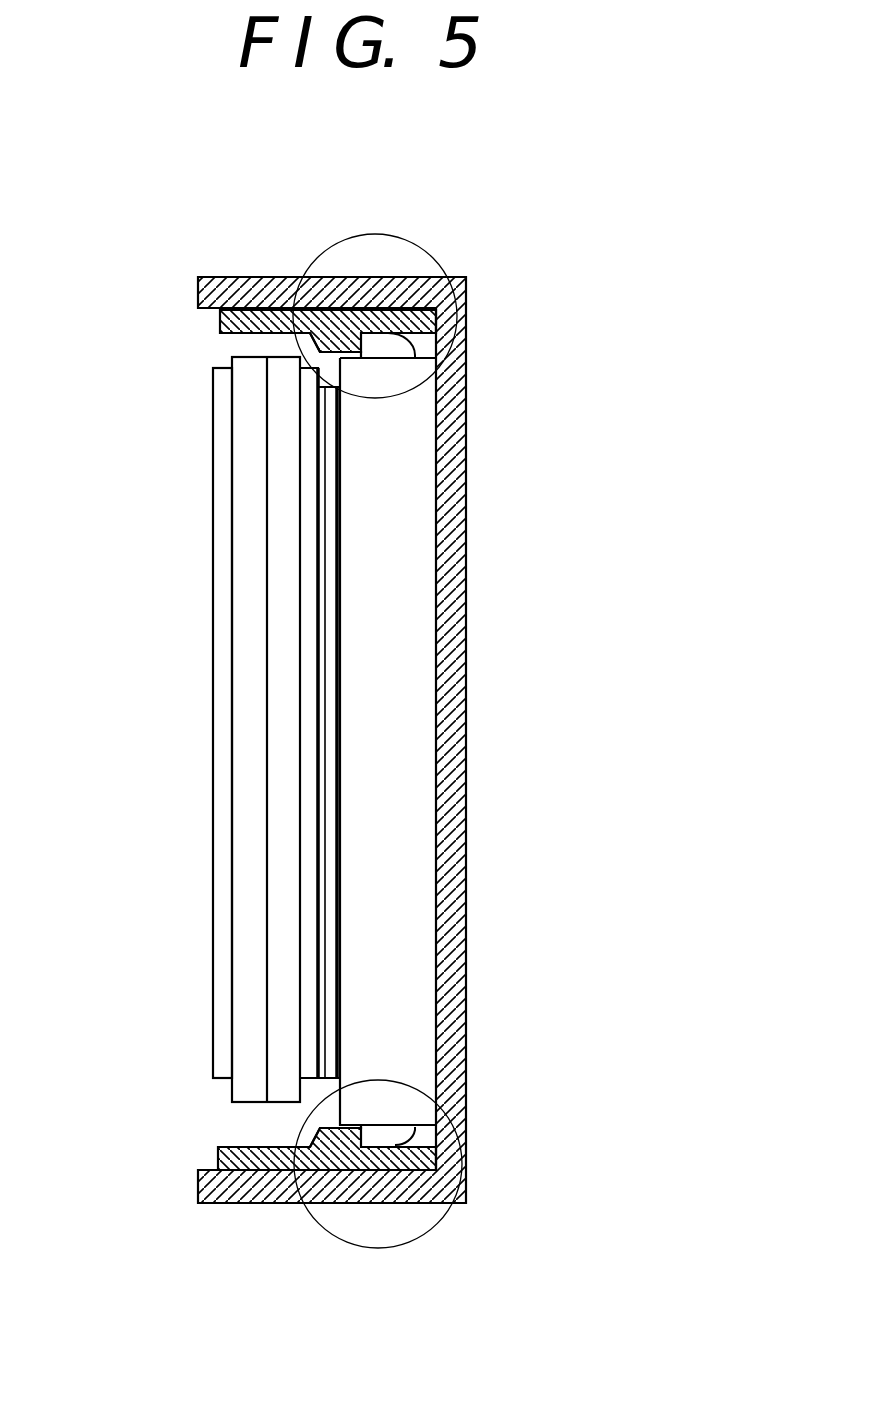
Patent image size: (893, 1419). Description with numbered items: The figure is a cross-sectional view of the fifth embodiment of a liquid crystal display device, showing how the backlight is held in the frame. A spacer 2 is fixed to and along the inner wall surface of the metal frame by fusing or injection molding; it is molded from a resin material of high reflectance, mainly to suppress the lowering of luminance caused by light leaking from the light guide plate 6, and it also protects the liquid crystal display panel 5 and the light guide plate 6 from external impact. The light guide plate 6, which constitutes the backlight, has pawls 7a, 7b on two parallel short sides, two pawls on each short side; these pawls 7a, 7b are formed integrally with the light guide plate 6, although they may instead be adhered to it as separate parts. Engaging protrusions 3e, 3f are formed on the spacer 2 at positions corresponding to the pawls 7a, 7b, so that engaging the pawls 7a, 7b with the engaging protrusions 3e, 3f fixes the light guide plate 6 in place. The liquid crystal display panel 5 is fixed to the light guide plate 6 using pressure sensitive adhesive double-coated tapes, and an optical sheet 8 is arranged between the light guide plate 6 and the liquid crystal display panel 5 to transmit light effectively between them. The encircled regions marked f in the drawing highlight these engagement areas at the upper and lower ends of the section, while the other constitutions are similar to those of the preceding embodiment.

The spacer 2 is at (232, 322).
The engaging protrusion 3e is at (349, 1140).
The engaging protrusion 3f is at (347, 340).
The liquid crystal display panel 5 is at (208, 729).
The light guide plate 6 is at (413, 848).
The pawl 7a is at (394, 1133).
The pawl 7b is at (390, 350).
The optical sheet 8 is at (327, 523).
The detail region f is at (338, 242).